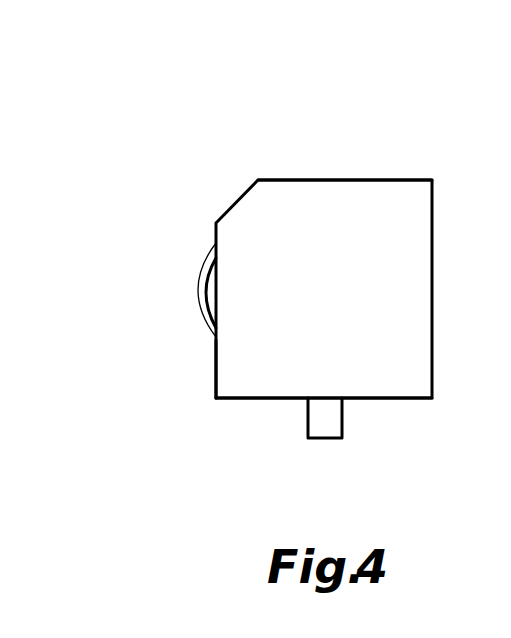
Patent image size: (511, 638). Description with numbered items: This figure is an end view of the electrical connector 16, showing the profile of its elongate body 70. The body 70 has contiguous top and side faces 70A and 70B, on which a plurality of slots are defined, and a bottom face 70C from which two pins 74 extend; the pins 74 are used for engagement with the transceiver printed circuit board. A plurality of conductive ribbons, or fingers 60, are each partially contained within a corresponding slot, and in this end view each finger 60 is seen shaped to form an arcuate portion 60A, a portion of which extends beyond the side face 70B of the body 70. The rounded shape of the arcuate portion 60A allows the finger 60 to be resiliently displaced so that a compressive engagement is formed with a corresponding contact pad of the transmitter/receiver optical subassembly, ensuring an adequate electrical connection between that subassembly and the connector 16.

The connector 16 is at (405, 124).
The finger 60 is at (202, 333).
The arcuate portion 60A is at (198, 277).
The elongate body 70 is at (392, 378).
The top face 70A is at (327, 177).
The side face 70B is at (215, 372).
The bottom face 70C is at (270, 398).
The pin 74 is at (342, 413).